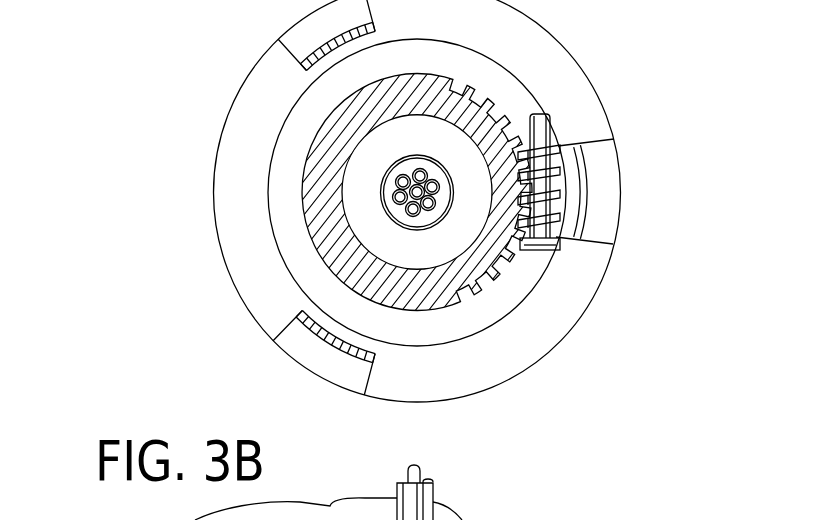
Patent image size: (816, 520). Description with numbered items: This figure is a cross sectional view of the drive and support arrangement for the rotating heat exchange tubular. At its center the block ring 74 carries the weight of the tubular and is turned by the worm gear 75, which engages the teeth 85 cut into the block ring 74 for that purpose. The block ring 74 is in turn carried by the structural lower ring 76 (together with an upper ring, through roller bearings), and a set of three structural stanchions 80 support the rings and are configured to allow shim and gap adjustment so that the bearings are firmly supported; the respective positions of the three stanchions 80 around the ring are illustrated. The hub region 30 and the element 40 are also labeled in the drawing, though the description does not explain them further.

The hub / cable bundle 30 is at (388, 168).
The block ring 74 is at (305, 203).
The worm gear 75 is at (552, 254).
The structural lower ring 76 is at (233, 286).
The structural stanchions 80 is at (260, 0).
The teeth 85 is at (558, 251).
The connector assembly 40 is at (744, 519).